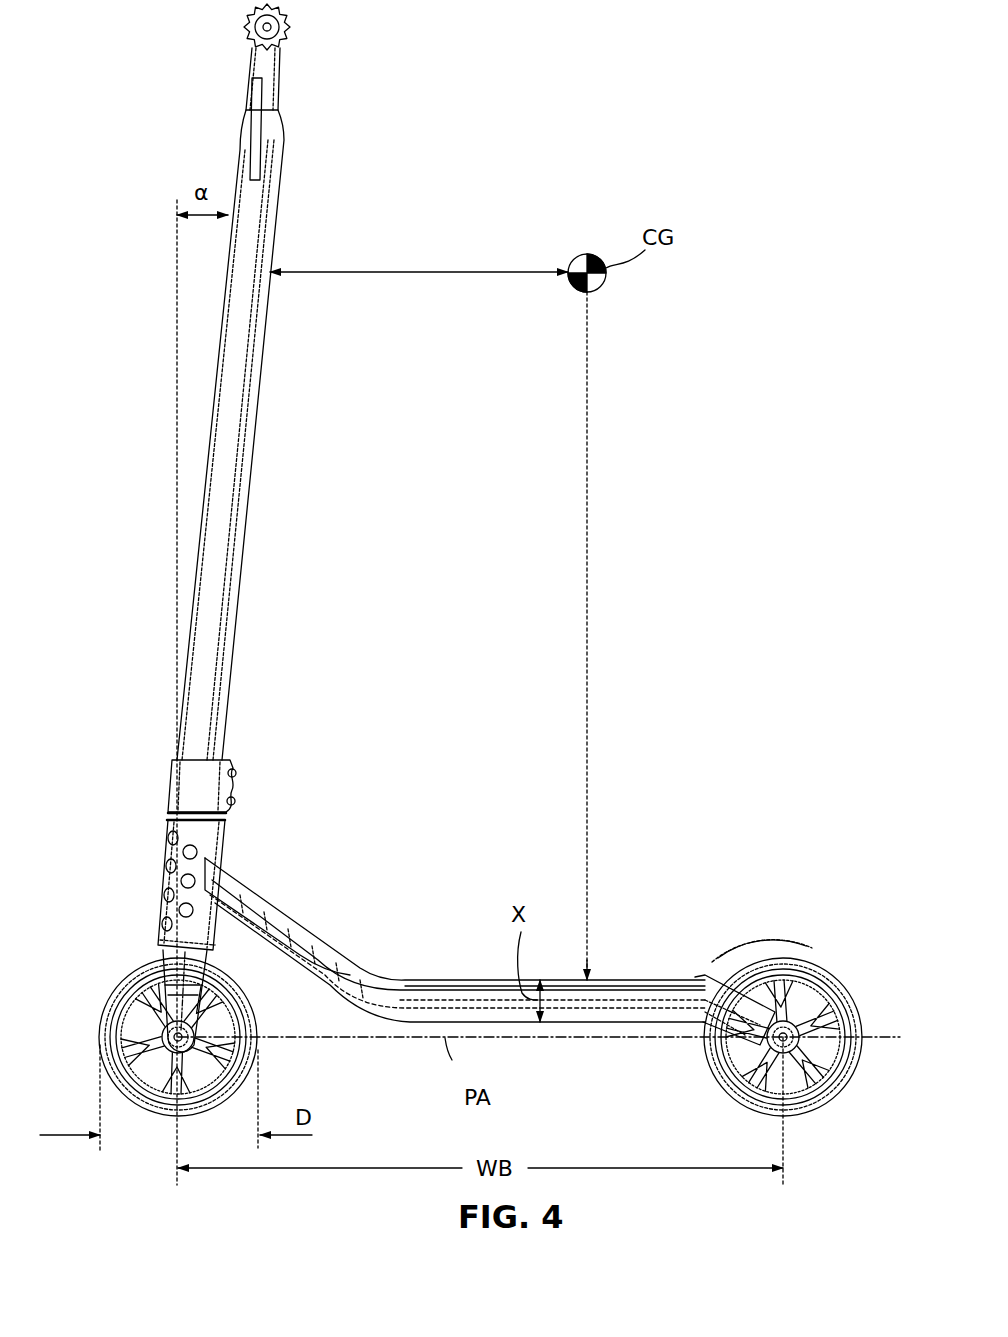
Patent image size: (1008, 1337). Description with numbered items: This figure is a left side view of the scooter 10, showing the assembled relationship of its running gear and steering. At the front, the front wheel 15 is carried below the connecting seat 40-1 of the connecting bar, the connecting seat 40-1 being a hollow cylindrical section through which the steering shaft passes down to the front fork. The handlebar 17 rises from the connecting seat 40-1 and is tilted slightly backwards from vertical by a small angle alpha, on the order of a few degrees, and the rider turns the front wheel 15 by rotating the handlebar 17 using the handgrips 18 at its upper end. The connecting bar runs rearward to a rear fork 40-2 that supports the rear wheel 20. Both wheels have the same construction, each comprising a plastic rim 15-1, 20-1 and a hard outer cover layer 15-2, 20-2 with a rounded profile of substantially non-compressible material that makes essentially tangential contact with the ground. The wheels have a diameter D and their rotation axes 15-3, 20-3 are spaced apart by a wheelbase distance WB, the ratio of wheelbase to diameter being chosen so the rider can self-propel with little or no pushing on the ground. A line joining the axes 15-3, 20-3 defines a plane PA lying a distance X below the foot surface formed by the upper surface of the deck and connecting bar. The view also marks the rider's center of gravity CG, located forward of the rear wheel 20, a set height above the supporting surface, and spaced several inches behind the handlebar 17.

The scooter 10 is at (488, 892).
The front wheel 15 is at (152, 1061).
The plastic rim 15-1 is at (150, 1068).
The hard outer cover layer 15-2 is at (112, 1007).
The axis of the front wheel 15-3 is at (177, 1042).
The handlebar 17 is at (218, 475).
The handgrip 18 is at (289, 40).
The rear wheel 20 is at (755, 987).
The plastic rim 20-1 is at (820, 972).
The hard outer cover layer 20-2 is at (860, 1055).
The axis of the rear wheel 20-3 is at (784, 975).
The connecting seat 40-1 is at (172, 850).
The rear fork 40-2 is at (740, 962).